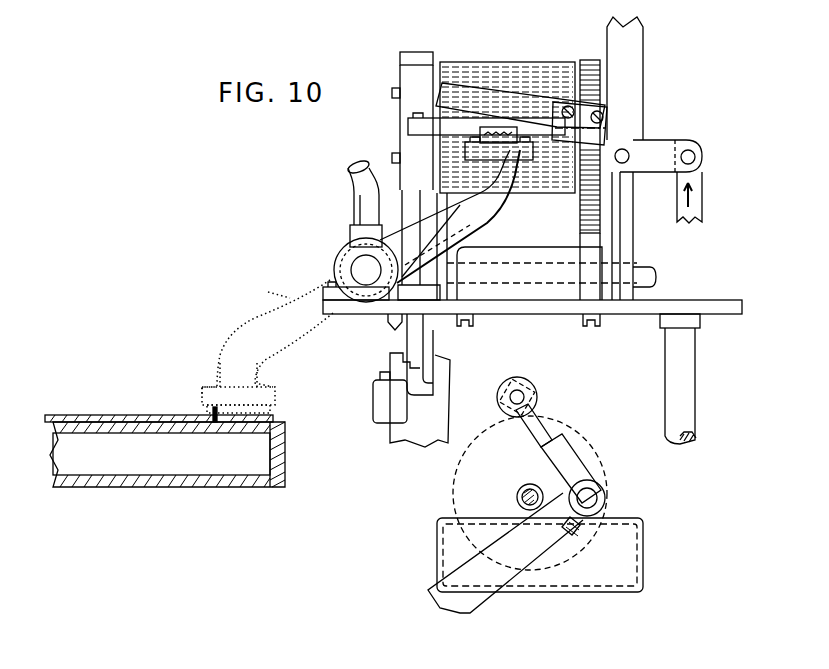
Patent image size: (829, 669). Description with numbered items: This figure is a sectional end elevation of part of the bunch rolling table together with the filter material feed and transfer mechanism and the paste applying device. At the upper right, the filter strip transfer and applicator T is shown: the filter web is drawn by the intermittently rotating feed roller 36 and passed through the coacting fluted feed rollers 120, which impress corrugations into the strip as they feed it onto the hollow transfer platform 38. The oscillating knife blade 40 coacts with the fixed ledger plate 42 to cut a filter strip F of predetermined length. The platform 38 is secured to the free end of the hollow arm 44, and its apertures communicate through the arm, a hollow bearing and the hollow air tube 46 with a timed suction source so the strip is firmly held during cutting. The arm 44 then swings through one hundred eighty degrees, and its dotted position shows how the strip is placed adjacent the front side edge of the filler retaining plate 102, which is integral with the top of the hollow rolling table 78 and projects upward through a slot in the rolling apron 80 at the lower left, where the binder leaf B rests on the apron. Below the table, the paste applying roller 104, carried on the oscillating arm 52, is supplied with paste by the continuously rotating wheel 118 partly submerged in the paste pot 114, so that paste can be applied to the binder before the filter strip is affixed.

The fluted feed rollers 120 is at (452, 63).
The feed roller 36 is at (520, 130).
The oscillating knife blade 40 is at (477, 93).
The filter strip F is at (500, 127).
The fixed ledger plate 42 is at (450, 133).
The hollow transfer platform 38 is at (522, 162).
The hollow arm 44 is at (473, 218).
The hollow air tube 46 is at (353, 192).
The filter strip transfer T is at (465, 263).
The binder leaf B is at (120, 417).
The filler retaining plate 102 is at (213, 415).
The rolling apron 80 is at (273, 422).
The hollow rolling table 78 is at (253, 485).
The paste applying roller 104 is at (540, 387).
The rotating wheel 118 is at (600, 463).
The paste pot 114 is at (643, 548).
The oscillating arm 52 is at (477, 600).